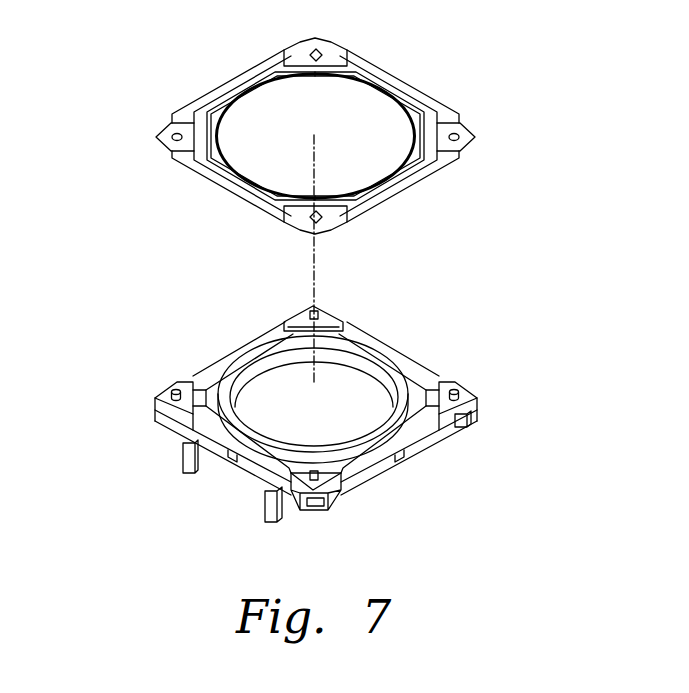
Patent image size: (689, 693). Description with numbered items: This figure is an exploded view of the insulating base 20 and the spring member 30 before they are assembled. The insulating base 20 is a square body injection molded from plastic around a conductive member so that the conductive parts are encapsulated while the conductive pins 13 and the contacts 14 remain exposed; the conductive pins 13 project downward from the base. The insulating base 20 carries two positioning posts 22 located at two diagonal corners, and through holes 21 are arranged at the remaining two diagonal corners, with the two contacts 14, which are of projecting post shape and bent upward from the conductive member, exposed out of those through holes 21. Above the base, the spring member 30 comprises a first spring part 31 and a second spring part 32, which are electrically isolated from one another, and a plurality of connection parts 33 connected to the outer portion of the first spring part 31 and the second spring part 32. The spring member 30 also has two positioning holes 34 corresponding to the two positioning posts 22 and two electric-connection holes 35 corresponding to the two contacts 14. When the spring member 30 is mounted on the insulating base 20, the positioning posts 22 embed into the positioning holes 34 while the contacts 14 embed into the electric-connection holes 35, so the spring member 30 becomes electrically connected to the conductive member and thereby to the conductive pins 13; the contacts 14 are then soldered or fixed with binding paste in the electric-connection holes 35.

The conductive pins 13 is at (186, 458).
The contacts 14 is at (294, 314).
The insulating base 20 is at (187, 303).
The through holes 21 is at (338, 314).
The positioning posts 22 is at (173, 388).
The spring member 30 is at (423, 78).
The first spring part 31 is at (376, 70).
The second spring part 32 is at (222, 156).
The connection parts 33 is at (222, 82).
The positioning holes 34 is at (172, 133).
The electric-connection holes 35 is at (325, 46).